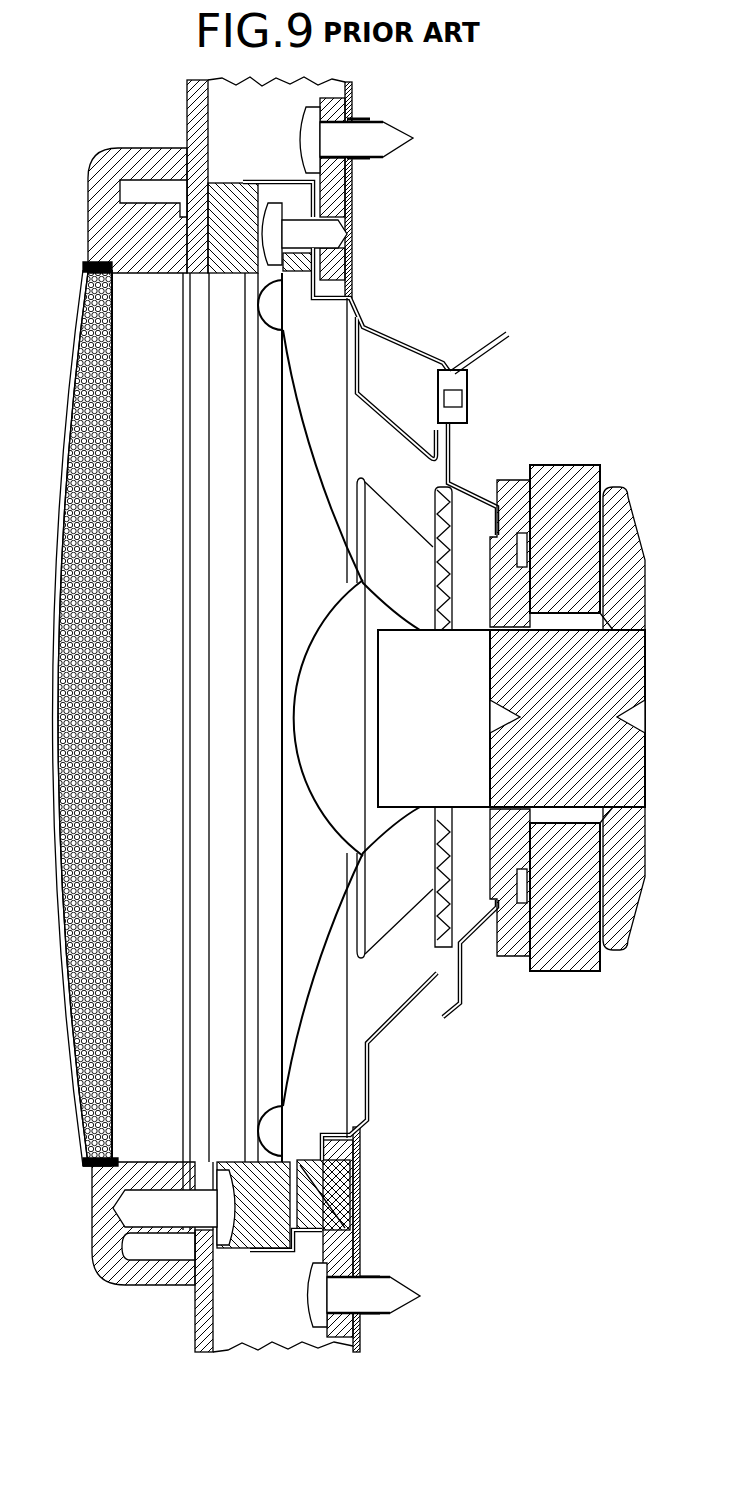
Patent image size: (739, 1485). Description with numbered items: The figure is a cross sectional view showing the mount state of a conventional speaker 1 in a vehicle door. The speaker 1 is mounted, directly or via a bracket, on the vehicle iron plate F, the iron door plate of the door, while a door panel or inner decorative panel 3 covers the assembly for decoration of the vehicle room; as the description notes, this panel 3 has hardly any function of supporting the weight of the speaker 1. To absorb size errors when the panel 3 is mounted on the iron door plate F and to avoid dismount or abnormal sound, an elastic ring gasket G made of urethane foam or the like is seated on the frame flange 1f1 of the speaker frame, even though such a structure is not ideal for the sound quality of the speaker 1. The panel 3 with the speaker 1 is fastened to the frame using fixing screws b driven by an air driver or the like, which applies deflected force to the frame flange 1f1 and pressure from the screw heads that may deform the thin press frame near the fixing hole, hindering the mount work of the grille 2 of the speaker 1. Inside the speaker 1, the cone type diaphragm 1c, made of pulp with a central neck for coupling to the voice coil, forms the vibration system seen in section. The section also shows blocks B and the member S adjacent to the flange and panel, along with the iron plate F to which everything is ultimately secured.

The speaker 1 is at (407, 487).
The cone type diaphragm 1c is at (313, 457).
The frame flange 1f1 is at (352, 236).
The grille 2 is at (147, 600).
The door panel or inner decorative panel 3 is at (187, 123).
The speaker box S is at (223, 108).
The elastic ring gasket G is at (187, 145).
The fixing screw b is at (221, 222).
The baffle block B is at (352, 197).
The iron door plate or vehicle iron plate F is at (353, 176).